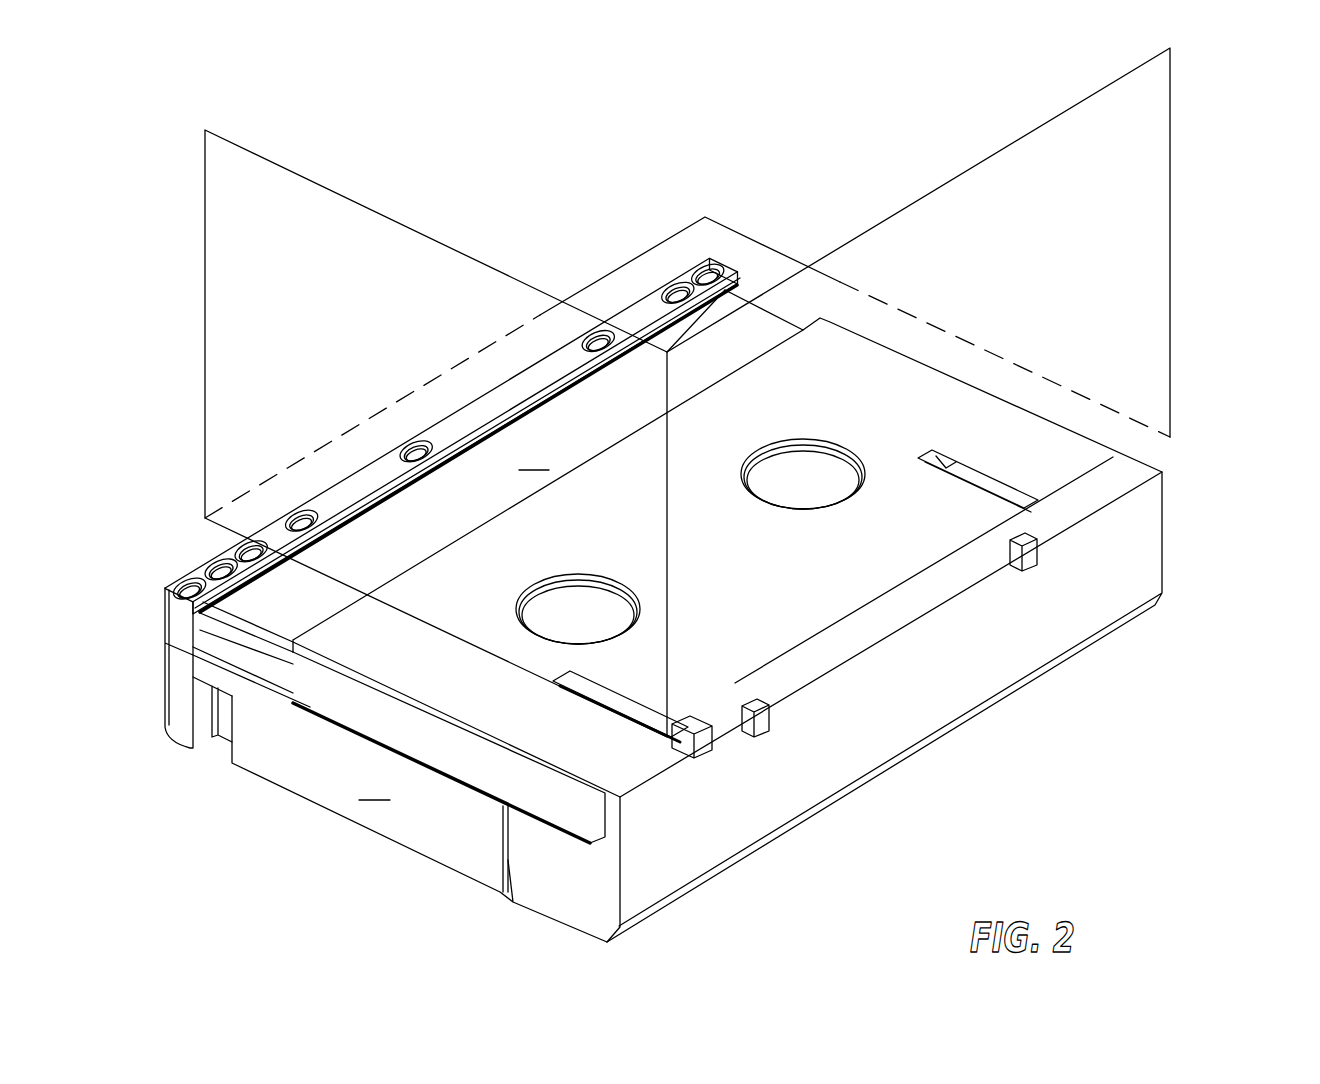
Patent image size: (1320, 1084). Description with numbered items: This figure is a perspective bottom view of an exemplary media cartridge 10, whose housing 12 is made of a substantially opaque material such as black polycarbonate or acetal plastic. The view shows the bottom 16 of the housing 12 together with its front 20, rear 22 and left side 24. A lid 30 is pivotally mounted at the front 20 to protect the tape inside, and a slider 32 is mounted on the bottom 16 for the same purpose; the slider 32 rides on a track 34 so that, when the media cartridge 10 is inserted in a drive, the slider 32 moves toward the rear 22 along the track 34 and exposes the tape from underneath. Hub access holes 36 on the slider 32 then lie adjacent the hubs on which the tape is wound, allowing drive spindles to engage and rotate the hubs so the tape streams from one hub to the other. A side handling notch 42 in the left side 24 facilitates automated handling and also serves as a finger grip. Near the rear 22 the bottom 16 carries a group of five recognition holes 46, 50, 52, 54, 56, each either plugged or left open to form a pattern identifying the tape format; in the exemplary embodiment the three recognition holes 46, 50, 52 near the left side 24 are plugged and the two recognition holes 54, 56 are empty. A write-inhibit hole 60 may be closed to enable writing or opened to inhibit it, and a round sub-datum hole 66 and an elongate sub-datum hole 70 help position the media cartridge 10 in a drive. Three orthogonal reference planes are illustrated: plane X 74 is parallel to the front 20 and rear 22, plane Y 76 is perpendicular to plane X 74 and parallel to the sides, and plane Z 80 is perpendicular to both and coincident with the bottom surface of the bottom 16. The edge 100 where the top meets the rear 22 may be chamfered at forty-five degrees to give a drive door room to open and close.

The media cartridge 10 is at (968, 306).
The housing 12 is at (398, 846).
The bottom 16 is at (663, 527).
The front 20 is at (1186, 568).
The rear 22 is at (448, 342).
The left side 24 is at (399, 752).
The lid 30 is at (1166, 526).
The slider 32 is at (1165, 458).
The track 34 is at (267, 680).
The hub access holes 36 is at (775, 503).
The side handling notch 42 is at (208, 742).
The recognition hole 46 is at (184, 580).
The recognition hole 50 is at (215, 560).
The recognition hole 52 is at (256, 540).
The recognition hole 54 is at (723, 266).
The recognition hole 56 is at (416, 426).
The write-inhibit hole 60 is at (684, 283).
The round sub-datum hole 66 is at (308, 494).
The elongate sub-datum hole 70 is at (586, 345).
The plane X 74 is at (1172, 96).
The plane Y 76 is at (205, 160).
The plane Z 80 is at (733, 232).
The edge 100 is at (164, 727).